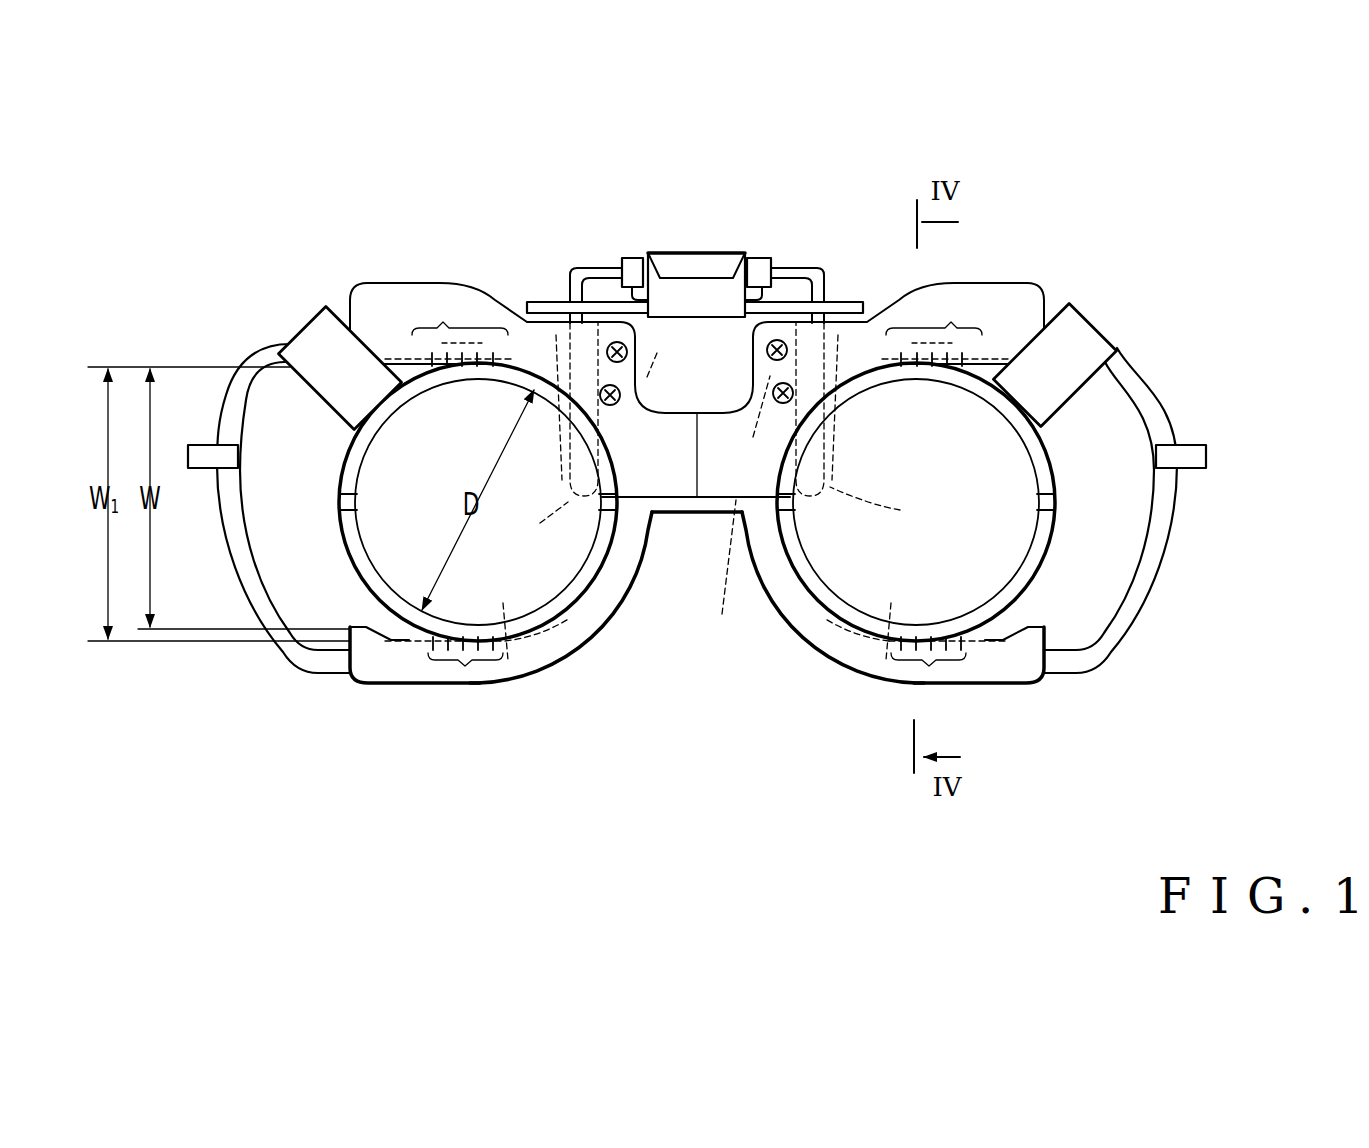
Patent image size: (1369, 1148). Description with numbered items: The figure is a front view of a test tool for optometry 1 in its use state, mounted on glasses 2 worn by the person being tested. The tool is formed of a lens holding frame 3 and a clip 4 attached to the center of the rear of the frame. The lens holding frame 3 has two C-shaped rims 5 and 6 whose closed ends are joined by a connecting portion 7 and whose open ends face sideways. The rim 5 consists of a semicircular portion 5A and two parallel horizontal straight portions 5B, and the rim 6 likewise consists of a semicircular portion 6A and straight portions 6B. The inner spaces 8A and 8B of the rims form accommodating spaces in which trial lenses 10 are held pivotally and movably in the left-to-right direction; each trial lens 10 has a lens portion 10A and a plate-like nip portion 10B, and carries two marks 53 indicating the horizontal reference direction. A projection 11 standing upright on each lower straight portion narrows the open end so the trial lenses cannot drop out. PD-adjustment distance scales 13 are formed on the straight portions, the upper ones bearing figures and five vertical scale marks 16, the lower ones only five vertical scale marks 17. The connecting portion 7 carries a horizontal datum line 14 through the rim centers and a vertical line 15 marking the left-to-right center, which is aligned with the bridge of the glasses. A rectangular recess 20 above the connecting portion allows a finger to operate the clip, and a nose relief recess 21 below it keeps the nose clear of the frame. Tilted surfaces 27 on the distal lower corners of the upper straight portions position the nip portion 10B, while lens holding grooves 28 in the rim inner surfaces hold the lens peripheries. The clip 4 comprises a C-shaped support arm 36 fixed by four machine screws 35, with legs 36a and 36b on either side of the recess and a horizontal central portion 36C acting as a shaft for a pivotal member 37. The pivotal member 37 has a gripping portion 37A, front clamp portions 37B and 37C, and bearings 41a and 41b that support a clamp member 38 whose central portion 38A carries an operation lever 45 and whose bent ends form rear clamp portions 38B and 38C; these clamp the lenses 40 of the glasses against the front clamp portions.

The test tool for optometry 1 is at (1105, 131).
The glasses 2 is at (1218, 399).
The lens holding frame 3 is at (1037, 265).
The clip 4 is at (800, 230).
The rim 5 is at (1010, 684).
The semicircular portion 5A is at (765, 583).
The horizontal straight portions 5B is at (1004, 290).
The rim 6 is at (381, 685).
The semicircular portion 6A is at (608, 618).
The horizontal straight portions 6B is at (394, 298).
The connecting portion 7 is at (725, 574).
The inner space 8A is at (1062, 658).
The inner space 8B is at (357, 612).
The trial lens 10 is at (335, 590).
The lens portion 10A is at (500, 603).
The nip portion 10B is at (347, 325).
The projection 11 is at (358, 660).
The PD-adjustment distance scale 13 is at (443, 326).
The horizontal line 14 is at (618, 537).
The vertical line 15 is at (686, 500).
The vertical scale marks 16 is at (477, 352).
The vertical scale marks 17 is at (458, 652).
The rectangular recess 20 is at (694, 413).
The nose relief recess 21 is at (710, 517).
The tilted surface 27 is at (345, 305).
The lens holding groove 28 is at (555, 645).
The machine screws 35 is at (620, 398).
The support arm 36 is at (786, 287).
The leg 36a is at (826, 453).
The leg 36b is at (592, 438).
The central portion 36C is at (626, 258).
The pivotal member 37 is at (722, 326).
The gripping portion 37A is at (680, 258).
The front clamp portion 37B is at (810, 345).
The front clamp portion 37C is at (530, 345).
The clamp member 38 is at (780, 256).
The central portion 38A is at (600, 332).
The rear clamp portion 38B is at (840, 375).
The rear clamp portion 38C is at (548, 400).
The lens 40 is at (253, 418).
The bearing 41a is at (752, 258).
The bearing 41b is at (637, 258).
The operation lever 45 is at (710, 255).
The mark 53 is at (337, 503).